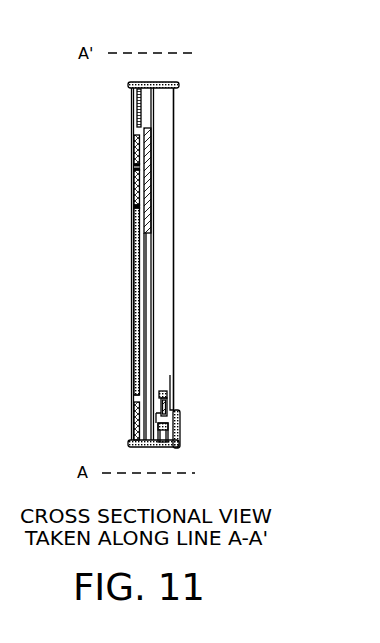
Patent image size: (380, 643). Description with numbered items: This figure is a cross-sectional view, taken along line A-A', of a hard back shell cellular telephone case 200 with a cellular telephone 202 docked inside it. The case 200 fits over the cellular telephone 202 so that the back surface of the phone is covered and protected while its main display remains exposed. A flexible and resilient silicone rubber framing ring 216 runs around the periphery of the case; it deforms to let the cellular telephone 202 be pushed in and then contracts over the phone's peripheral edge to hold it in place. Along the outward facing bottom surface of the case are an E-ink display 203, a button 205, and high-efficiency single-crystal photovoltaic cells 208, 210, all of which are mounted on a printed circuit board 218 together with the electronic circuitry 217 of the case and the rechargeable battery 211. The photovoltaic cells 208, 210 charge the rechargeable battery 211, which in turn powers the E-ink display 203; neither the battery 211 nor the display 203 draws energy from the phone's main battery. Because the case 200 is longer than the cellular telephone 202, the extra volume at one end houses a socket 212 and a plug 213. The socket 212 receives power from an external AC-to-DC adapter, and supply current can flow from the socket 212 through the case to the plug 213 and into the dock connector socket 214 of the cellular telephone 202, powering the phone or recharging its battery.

The hard back shell cellular telephone case 200 is at (44, 58).
The cellular telephone 202 is at (162, 241).
The E-ink display 203 is at (134, 278).
The button 205 is at (134, 416).
The photovoltaic cell 208 is at (134, 152).
The photovoltaic cell 210 is at (134, 188).
The rechargeable battery 211 is at (151, 170).
The socket 212 is at (173, 432).
The plug 213 is at (167, 405).
The dock connector socket 214 is at (167, 393).
The framing ring 216 is at (151, 82).
The electronic circuitry 217 is at (136, 111).
The printed circuit board 218 is at (144, 354).